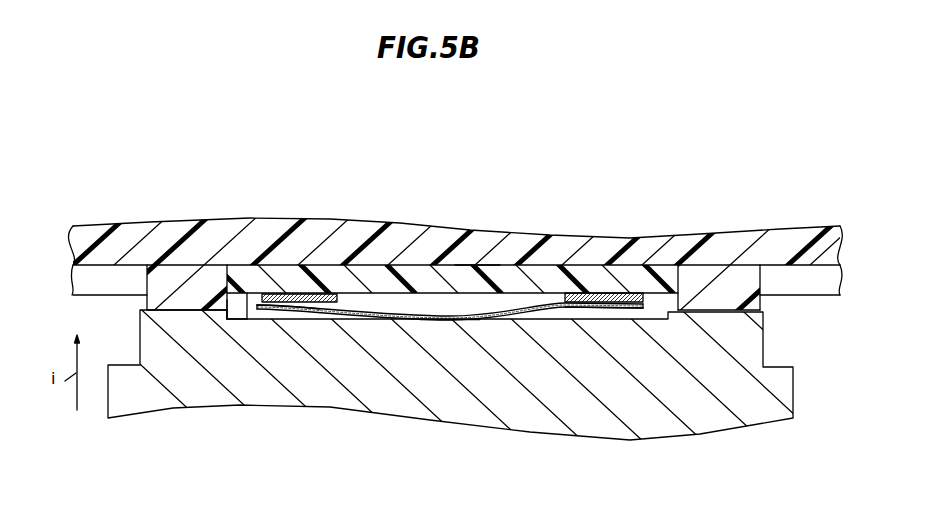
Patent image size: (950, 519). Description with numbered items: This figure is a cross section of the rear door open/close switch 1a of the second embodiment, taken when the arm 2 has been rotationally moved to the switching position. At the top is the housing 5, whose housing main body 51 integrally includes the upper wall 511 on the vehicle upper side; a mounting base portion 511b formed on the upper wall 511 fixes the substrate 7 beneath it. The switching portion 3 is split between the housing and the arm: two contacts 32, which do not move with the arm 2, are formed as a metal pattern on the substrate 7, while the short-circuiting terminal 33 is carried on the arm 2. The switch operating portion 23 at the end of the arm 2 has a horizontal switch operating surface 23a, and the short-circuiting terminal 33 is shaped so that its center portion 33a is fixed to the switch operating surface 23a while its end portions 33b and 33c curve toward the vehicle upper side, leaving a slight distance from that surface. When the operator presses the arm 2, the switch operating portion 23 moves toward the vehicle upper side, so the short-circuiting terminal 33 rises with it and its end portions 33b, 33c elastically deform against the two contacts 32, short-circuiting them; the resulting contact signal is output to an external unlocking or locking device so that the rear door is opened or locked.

The rear door open/close switch 1a is at (348, 160).
The arm 2 is at (772, 440).
The switching portion 3 is at (498, 298).
The housing 5 is at (700, 306).
The substrate 7 is at (638, 279).
The switch operating portion 23 is at (231, 305).
The switch operating surface 23a is at (243, 303).
The contacts 32 is at (298, 294).
The short-circuiting terminal 33 is at (450, 316).
The center portion 33a is at (448, 321).
The end portion 33b is at (287, 309).
The end portion 33c is at (620, 308).
The housing main body 51 is at (73, 231).
The upper wall 511 is at (114, 222).
The mounting base portion 511b is at (477, 257).